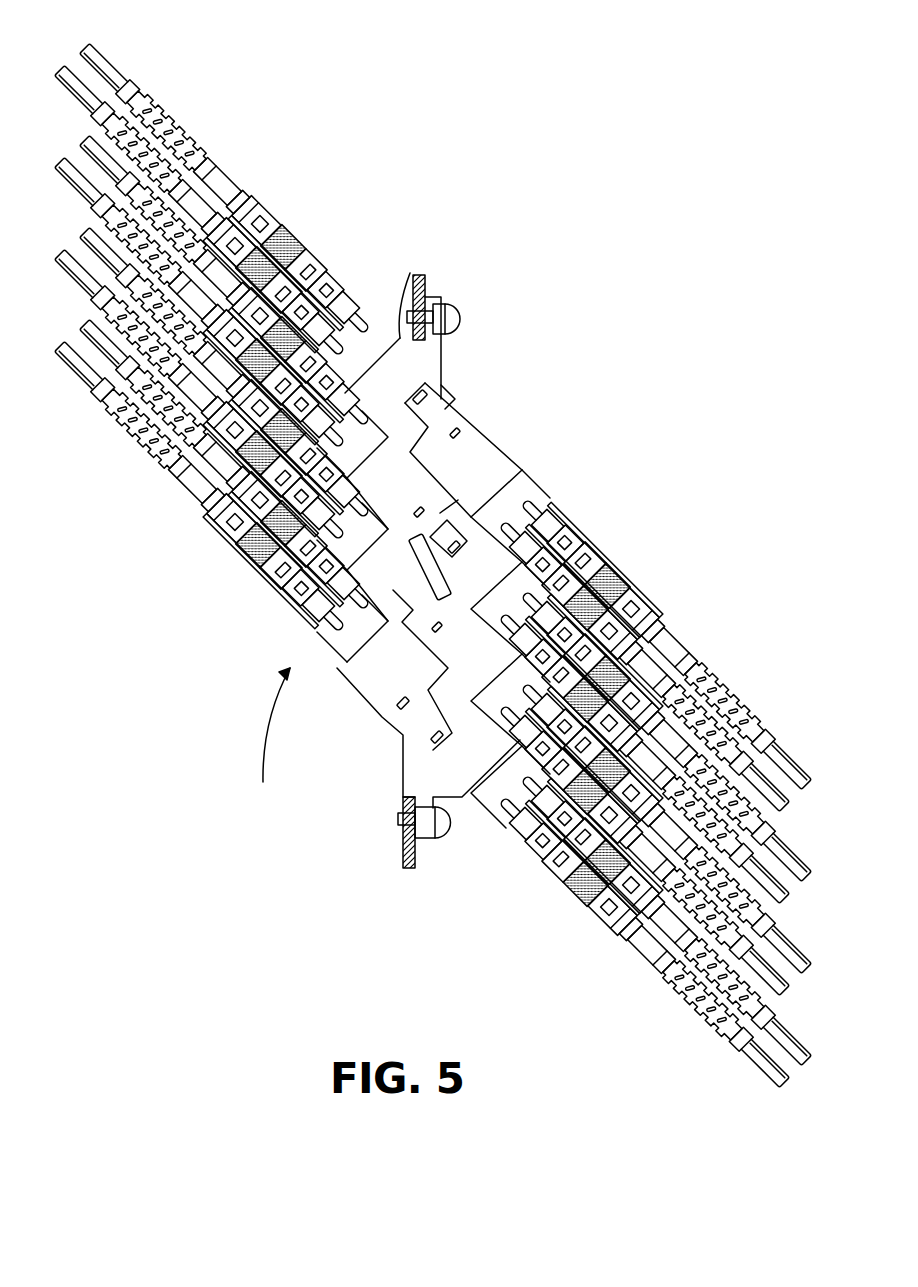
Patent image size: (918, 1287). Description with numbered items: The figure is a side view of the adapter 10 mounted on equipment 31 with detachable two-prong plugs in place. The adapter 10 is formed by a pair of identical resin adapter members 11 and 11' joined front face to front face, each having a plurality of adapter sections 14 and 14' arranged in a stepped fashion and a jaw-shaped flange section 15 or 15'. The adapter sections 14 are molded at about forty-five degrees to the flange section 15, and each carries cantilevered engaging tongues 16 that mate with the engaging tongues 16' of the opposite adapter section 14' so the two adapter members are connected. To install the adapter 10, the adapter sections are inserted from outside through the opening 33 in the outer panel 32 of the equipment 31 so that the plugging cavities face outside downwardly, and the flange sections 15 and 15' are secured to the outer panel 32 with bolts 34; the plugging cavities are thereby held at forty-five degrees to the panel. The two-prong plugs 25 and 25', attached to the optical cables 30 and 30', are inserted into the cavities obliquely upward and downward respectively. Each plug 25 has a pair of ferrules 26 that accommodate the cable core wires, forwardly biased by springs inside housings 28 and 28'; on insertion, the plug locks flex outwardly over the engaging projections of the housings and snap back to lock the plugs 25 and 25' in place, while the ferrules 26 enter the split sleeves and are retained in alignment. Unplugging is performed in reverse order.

The adapter 10 is at (500, 387).
The adapter member 11 is at (502, 489).
The adapter member 11' is at (421, 714).
The adapter section 14 is at (643, 717).
The adapter section 14' is at (223, 432).
The flange section 15 is at (424, 867).
The flange section 15' is at (470, 299).
The first cantilevered engaging tongue 16 is at (412, 544).
The engaging tongue 16' is at (462, 651).
The two-prong plug 25 is at (635, 552).
The two-prong plug 25' is at (302, 206).
The ferrule 26 is at (527, 503).
The housing 28 is at (672, 594).
The housing 28' is at (269, 173).
The optical cable 30 is at (792, 747).
The optical cable 30' is at (157, 61).
The equipment 31 is at (269, 745).
The outer panel 32 is at (440, 296).
The opening 33 is at (418, 278).
The bolt 34 is at (456, 318).